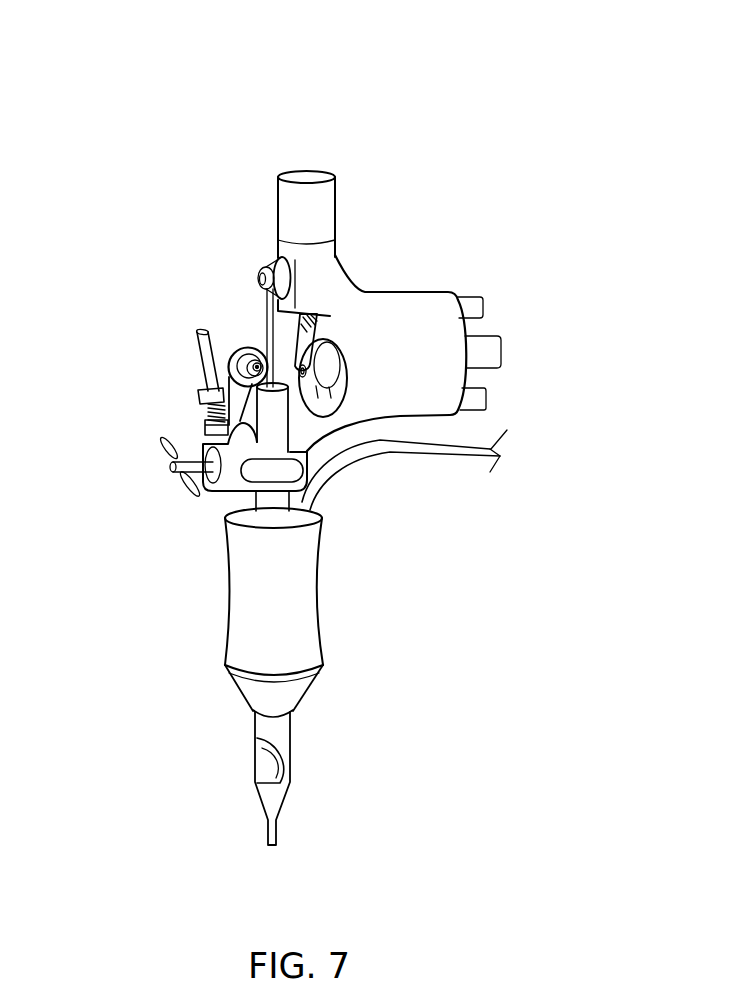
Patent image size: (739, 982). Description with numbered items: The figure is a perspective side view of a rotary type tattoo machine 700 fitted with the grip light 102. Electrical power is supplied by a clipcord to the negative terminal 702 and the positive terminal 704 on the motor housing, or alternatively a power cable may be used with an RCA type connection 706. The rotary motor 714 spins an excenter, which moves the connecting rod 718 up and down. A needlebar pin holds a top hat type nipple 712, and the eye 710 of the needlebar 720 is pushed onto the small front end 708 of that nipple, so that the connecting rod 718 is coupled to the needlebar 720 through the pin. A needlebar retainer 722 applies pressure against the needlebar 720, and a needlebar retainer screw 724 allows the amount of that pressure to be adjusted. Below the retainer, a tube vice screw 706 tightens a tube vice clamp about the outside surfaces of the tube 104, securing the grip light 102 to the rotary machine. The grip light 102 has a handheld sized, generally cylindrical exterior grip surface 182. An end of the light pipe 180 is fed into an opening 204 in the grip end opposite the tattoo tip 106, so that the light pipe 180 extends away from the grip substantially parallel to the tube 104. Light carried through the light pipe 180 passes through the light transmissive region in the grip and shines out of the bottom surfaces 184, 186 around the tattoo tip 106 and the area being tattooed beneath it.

The rotary type tattoo machine 700 is at (458, 143).
The negative terminal 702 is at (483, 303).
The positive terminal 704 is at (486, 396).
The RCA type connection / tube vice screw 706 is at (501, 350).
The small (front) end of top hat nipple 708 is at (260, 268).
The eye of the needlebar 710 is at (276, 272).
The top hat type nipple 712 is at (279, 260).
The rotary motor 714 is at (335, 355).
The connecting rod 718 is at (313, 312).
The needlebar 720 is at (268, 330).
The needlebar retainer 722 is at (238, 348).
The needlebar retainer screw 724 is at (207, 363).
The tube 104 is at (243, 499).
The light pipe 180 is at (433, 450).
The opening 204 is at (318, 513).
The grip light 102 is at (282, 587).
The grip portion/grip surface 182 is at (318, 630).
The bottom surface 184 is at (233, 695).
The bottom surface 186 is at (313, 693).
The tattoo tip 106 is at (288, 806).